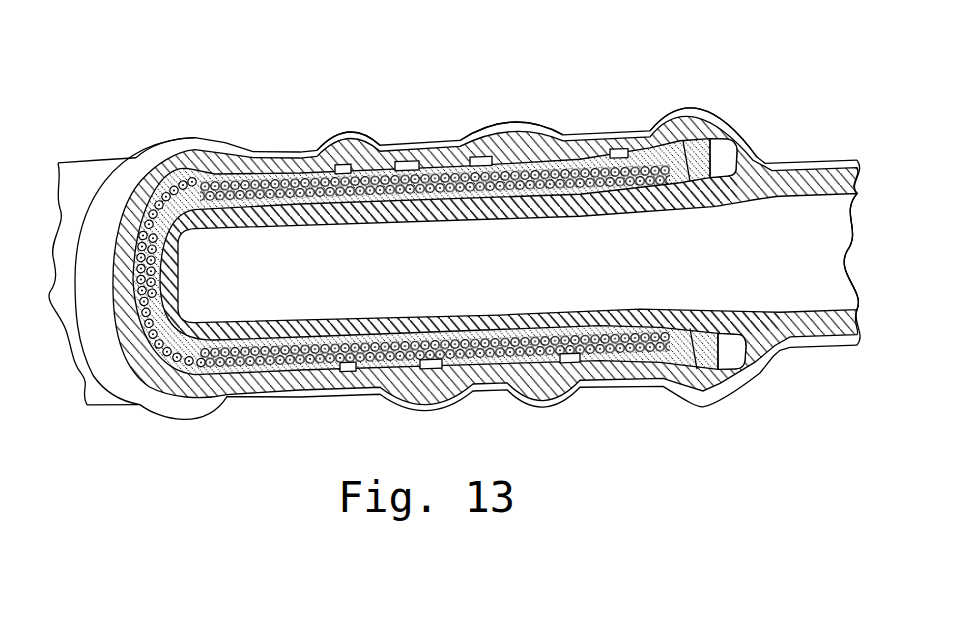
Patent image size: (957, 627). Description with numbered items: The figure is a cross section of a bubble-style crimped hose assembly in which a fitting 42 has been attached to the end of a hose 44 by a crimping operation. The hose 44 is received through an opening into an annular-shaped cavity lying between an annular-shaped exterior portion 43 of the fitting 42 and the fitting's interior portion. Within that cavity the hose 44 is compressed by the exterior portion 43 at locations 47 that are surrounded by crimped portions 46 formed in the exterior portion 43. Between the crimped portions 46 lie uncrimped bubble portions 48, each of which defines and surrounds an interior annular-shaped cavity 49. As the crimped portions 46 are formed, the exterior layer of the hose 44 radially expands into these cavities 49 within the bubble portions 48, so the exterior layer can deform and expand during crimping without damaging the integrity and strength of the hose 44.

The fitting 42 is at (344, 106).
The exterior portion 43 is at (621, 162).
The hose 44 is at (540, 207).
The crimped portions 46 is at (427, 393).
The locations 47 is at (447, 173).
The bubble portions 48 is at (318, 141).
The interior annular-shaped cavities 49 is at (507, 357).